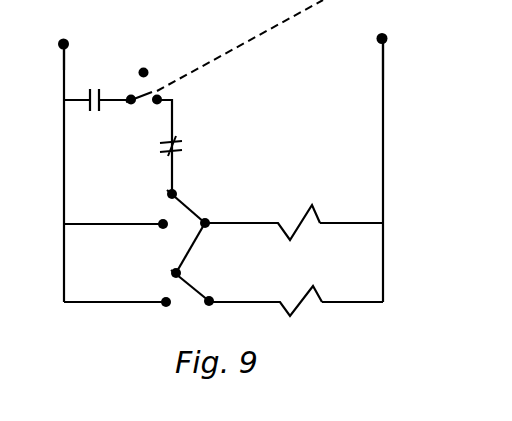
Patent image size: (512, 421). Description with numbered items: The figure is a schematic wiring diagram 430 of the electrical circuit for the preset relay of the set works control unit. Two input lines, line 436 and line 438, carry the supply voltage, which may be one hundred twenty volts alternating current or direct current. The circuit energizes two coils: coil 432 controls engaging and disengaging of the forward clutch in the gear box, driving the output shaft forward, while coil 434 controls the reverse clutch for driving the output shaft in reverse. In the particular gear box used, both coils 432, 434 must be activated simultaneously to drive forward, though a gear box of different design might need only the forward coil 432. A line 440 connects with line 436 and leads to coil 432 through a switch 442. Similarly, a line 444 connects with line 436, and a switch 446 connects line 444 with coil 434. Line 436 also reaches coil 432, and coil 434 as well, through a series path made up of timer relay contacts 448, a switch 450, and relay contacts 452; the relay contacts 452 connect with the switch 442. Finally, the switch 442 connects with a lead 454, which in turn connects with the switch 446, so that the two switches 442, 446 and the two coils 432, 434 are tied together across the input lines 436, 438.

The schematic wiring diagram 430 is at (400, 286).
The coil 432 is at (330, 203).
The coil 434 is at (283, 313).
The line 436 is at (64, 58).
The line 438 is at (383, 72).
The line 440 is at (78, 224).
The switch 442 is at (192, 209).
The line 444 is at (122, 285).
The switch 446 is at (190, 282).
The timer relay contacts 448 is at (90, 110).
The switch 450 is at (141, 103).
The relay contacts 452 is at (187, 137).
The lead 454 is at (198, 243).